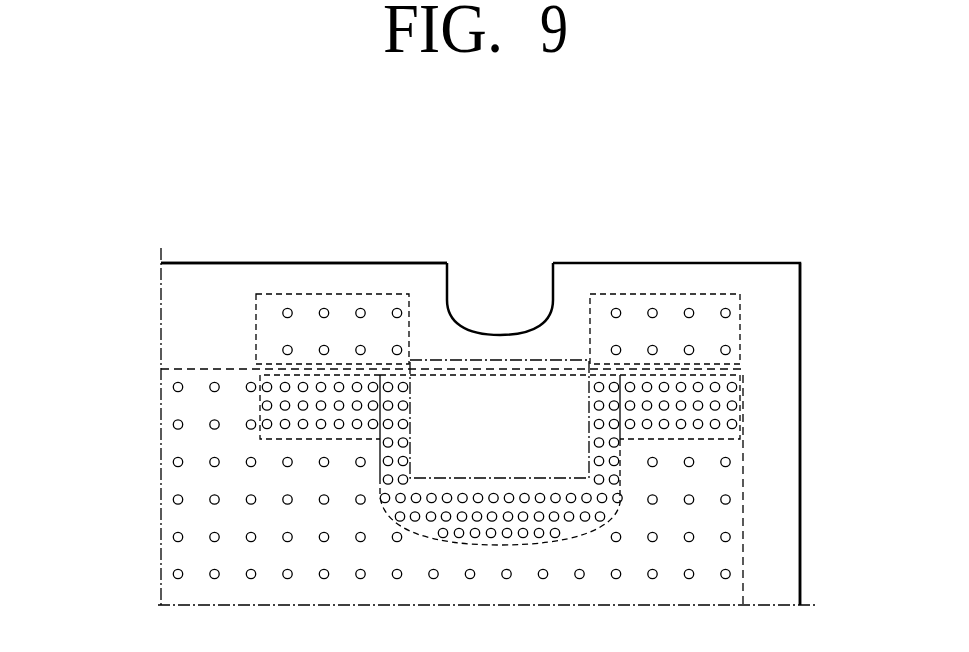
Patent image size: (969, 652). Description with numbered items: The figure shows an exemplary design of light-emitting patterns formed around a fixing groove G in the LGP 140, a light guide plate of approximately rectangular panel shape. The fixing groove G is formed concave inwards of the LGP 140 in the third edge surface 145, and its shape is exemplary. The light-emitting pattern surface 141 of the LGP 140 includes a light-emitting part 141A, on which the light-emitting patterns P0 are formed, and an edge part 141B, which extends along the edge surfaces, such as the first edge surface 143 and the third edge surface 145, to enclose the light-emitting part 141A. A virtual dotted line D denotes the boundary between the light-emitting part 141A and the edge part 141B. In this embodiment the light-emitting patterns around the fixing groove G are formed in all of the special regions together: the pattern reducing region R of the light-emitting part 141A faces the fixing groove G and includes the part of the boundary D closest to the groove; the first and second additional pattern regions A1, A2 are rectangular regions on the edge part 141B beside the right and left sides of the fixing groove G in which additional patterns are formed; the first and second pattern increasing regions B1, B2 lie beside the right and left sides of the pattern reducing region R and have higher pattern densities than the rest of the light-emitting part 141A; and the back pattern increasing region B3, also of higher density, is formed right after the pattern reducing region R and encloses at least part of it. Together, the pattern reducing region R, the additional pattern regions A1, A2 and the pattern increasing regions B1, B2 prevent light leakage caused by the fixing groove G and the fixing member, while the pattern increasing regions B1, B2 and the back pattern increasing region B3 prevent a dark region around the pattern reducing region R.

The LGP 140 is at (770, 245).
The third edge surface 145 is at (187, 261).
The first edge surface 143 is at (802, 493).
The light-emitting pattern surface 141 is at (85, 390).
The light-emitting part 141A is at (188, 405).
The edge part 141B is at (183, 322).
The fixing groove G is at (450, 275).
The pattern reducing region R is at (565, 377).
The first additional pattern region A1 is at (666, 284).
The second additional pattern region A2 is at (309, 285).
The first pattern increasing region B1 is at (703, 366).
The second pattern increasing region B2 is at (362, 369).
The back pattern increasing region B3 is at (602, 366).
The light-emitting patterns P0 is at (178, 461).
The boundary D is at (743, 523).